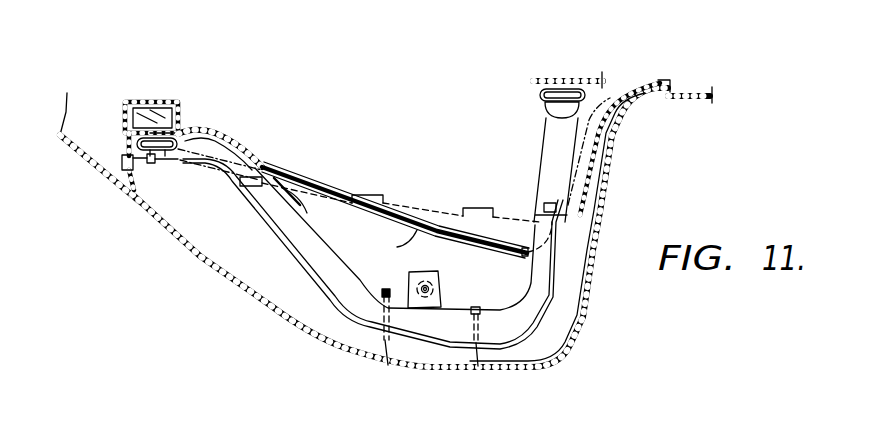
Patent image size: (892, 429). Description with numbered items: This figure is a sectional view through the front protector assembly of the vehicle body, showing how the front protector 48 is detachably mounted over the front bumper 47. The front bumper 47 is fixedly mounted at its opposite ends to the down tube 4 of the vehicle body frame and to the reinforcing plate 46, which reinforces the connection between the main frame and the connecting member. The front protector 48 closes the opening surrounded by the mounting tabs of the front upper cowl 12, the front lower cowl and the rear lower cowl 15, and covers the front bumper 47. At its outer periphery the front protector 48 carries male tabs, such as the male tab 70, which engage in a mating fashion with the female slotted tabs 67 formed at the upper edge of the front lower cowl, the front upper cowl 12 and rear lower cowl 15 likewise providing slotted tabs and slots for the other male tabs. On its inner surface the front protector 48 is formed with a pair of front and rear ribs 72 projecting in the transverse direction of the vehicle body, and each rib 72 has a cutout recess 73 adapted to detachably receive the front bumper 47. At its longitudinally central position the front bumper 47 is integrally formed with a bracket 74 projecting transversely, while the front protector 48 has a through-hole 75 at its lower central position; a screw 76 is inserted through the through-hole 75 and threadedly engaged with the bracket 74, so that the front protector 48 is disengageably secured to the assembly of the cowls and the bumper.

The down tube 4 is at (145, 102).
The front upper cowl 12 is at (80, 157).
The rear lower cowl 15 is at (706, 106).
The reinforcing plate 46 is at (550, 80).
The front bumper 47 is at (275, 247).
The front protector 48 is at (247, 290).
The female slotted tabs 67 is at (345, 217).
The male tab 70 is at (273, 167).
The ribs 72 is at (402, 350).
The cutout recess 73 is at (380, 337).
The bracket 74 is at (421, 272).
The through-hole 75 is at (442, 284).
The screw 76 is at (410, 281).